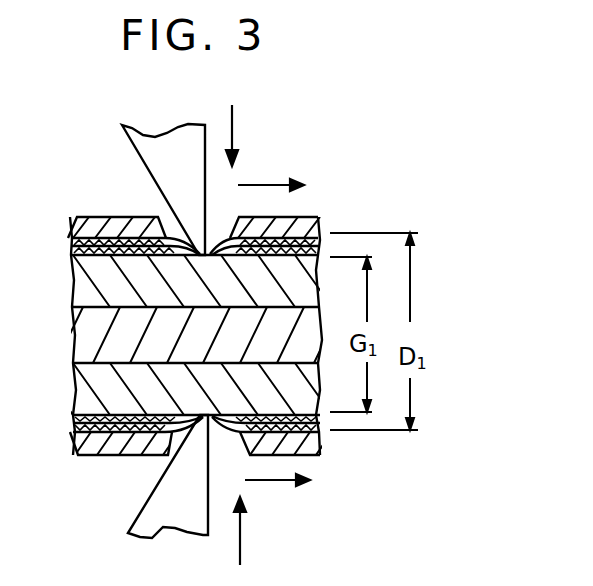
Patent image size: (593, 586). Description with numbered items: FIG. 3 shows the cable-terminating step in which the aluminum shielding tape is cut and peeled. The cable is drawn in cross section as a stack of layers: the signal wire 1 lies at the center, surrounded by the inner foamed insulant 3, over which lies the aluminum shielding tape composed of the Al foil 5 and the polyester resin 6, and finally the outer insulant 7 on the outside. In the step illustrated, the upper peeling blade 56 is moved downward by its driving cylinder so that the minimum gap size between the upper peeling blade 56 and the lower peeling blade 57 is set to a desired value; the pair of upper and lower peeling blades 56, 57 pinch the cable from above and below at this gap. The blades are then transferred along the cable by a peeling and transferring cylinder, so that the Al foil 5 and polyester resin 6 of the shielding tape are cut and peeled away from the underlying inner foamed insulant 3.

The signal wire 1 is at (80, 338).
The inner foamed insulant 3 is at (80, 288).
The Al foil 5 is at (70, 253).
The polyester resin 6 is at (70, 242).
The outer insulant 7 is at (115, 217).
The upper peeling blade 56 is at (148, 150).
The peeling blade 57 is at (157, 508).